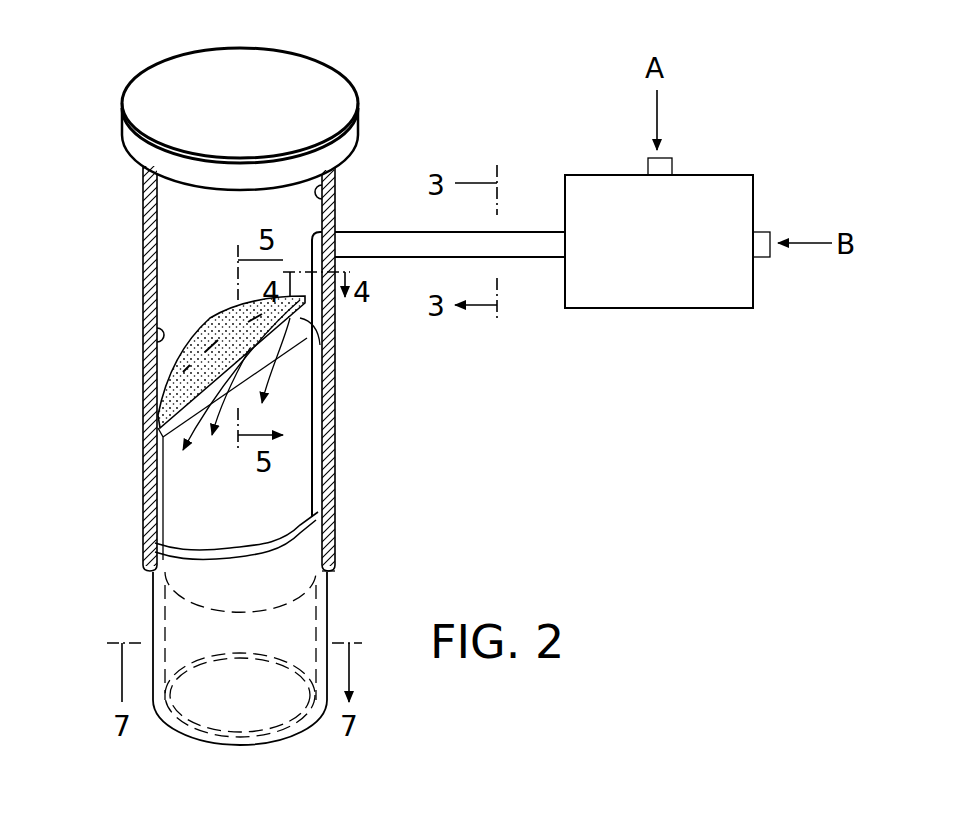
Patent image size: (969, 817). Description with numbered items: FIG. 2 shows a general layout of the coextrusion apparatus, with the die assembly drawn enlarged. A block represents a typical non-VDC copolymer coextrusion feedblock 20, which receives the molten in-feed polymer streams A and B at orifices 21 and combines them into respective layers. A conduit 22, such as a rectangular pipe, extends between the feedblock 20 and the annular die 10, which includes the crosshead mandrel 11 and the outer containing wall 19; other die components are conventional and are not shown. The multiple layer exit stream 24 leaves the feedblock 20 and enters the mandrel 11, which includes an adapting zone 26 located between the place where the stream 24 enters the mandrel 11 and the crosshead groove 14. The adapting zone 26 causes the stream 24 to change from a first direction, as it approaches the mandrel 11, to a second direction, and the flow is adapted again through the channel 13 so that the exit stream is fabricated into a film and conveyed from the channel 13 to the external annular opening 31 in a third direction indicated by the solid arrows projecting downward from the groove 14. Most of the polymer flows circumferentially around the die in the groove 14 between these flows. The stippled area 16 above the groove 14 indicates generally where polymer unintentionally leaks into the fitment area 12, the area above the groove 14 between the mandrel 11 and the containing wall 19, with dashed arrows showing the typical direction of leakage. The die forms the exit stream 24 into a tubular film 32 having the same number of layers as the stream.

The annular die 10 is at (357, 73).
The crosshead mandrel 11 is at (168, 222).
The fitment area 12 is at (160, 336).
The channel 13 is at (323, 440).
The crosshead groove 14 is at (305, 320).
The stippled area 16 is at (165, 372).
The outer containing wall 19 is at (143, 300).
The coextrusion feedblock 20 is at (711, 160).
The orifices 21 is at (650, 170).
The conduit 22 is at (531, 231).
The exit stream 24 is at (155, 597).
The adapting zone 26 is at (317, 243).
The external annular opening 31 is at (337, 571).
The film 32 is at (327, 712).